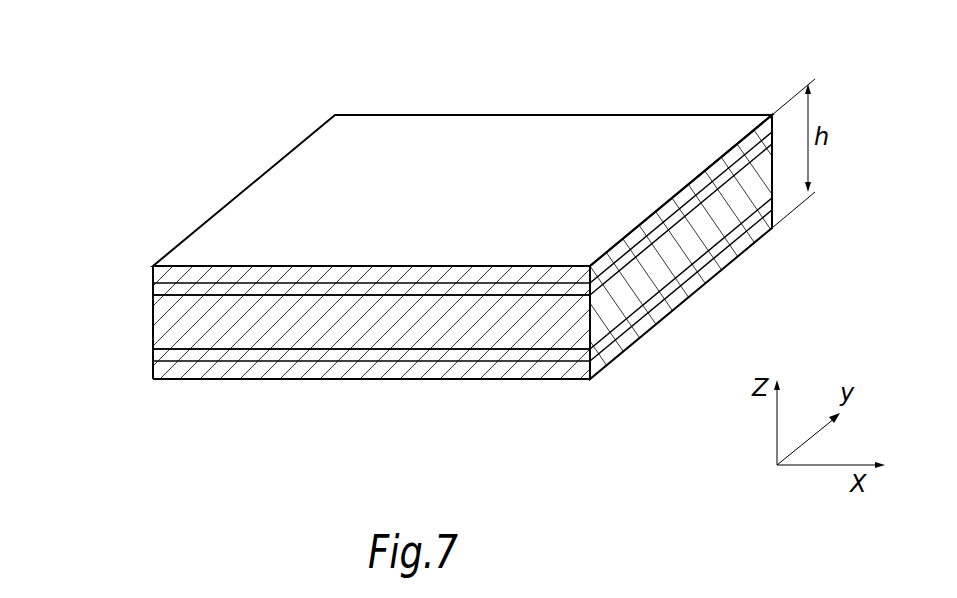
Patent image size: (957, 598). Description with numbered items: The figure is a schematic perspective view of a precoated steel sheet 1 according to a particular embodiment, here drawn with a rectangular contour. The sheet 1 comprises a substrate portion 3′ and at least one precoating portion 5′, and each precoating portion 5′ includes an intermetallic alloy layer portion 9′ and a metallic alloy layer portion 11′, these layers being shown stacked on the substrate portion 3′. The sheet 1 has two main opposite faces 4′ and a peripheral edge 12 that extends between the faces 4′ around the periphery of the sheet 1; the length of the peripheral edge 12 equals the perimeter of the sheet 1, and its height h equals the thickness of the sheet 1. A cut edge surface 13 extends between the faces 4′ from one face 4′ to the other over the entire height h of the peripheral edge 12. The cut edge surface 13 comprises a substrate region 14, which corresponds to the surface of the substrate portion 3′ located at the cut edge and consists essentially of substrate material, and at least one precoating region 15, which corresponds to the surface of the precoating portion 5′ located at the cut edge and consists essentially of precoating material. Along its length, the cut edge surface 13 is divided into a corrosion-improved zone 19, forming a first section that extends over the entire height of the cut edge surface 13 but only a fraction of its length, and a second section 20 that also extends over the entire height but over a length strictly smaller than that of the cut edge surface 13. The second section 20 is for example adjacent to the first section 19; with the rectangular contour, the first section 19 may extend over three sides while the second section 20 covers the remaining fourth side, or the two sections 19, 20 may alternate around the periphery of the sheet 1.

The precoated steel sheet 1 is at (292, 107).
The main opposite faces 4′ is at (470, 188).
The substrate portion 3′ is at (165, 325).
The precoating portion 5′ is at (68, 246).
The metallic alloy layer portion 11′ is at (153, 275).
The intermetallic alloy layer portion 9′ is at (153, 300).
The peripheral edge 12 is at (240, 350).
The corrosion-improved zone 19 is at (450, 380).
The cut edge surface 13 is at (782, 172).
The substrate region 14 is at (757, 222).
The precoating region 15 is at (662, 229).
The second section 20 is at (620, 358).